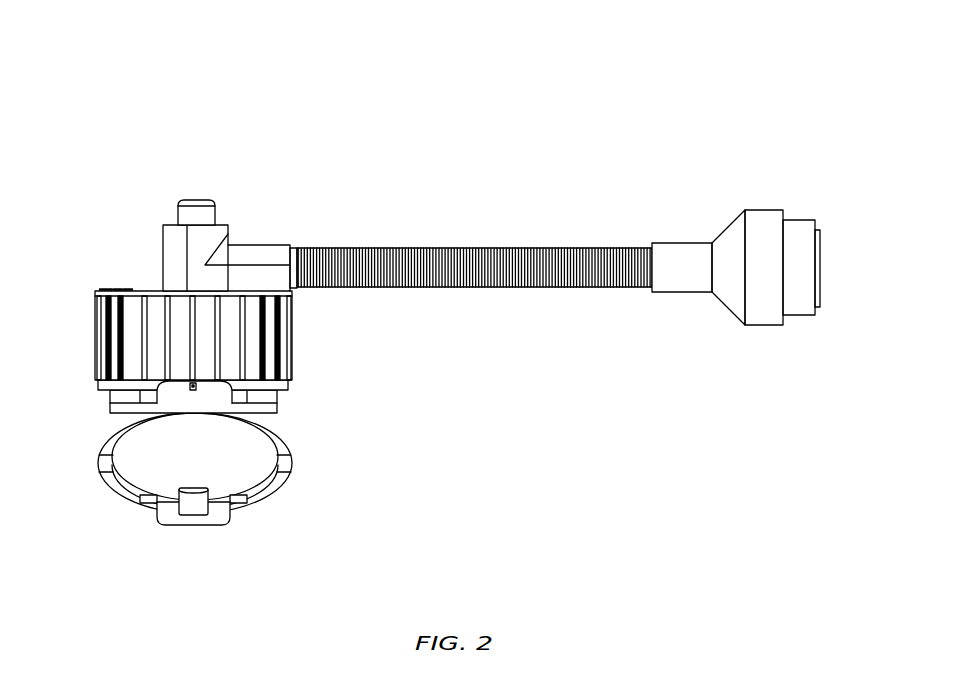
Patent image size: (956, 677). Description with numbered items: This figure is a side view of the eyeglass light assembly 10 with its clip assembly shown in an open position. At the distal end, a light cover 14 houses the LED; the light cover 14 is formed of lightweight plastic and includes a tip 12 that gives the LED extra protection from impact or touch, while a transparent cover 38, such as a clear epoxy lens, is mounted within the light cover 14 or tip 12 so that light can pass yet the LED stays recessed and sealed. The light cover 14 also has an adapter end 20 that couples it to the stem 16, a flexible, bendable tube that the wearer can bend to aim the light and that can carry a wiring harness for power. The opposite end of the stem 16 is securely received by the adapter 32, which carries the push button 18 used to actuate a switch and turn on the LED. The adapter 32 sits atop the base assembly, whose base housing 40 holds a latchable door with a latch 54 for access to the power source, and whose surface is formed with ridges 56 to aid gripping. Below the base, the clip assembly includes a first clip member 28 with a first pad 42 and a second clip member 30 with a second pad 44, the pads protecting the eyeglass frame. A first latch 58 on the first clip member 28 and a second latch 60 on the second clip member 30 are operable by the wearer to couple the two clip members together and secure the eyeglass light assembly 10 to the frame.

The eyeglass light assembly 10 is at (302, 88).
The tip 12 is at (803, 220).
The light cover 14 is at (765, 210).
The stem 16 is at (414, 257).
The push button 18 is at (190, 199).
The adapter end 20 is at (688, 243).
The first clip member 28 is at (289, 392).
The second clip member 30 is at (242, 510).
The adapter 32 is at (268, 252).
The transparent cover 38 is at (820, 268).
The base housing 40 is at (192, 335).
The first pad 42 is at (113, 405).
The second pad 44 is at (125, 444).
The latch 54 is at (110, 289).
The ridges 56 is at (95, 338).
The first latch 58 is at (196, 389).
The second latch 60 is at (192, 512).